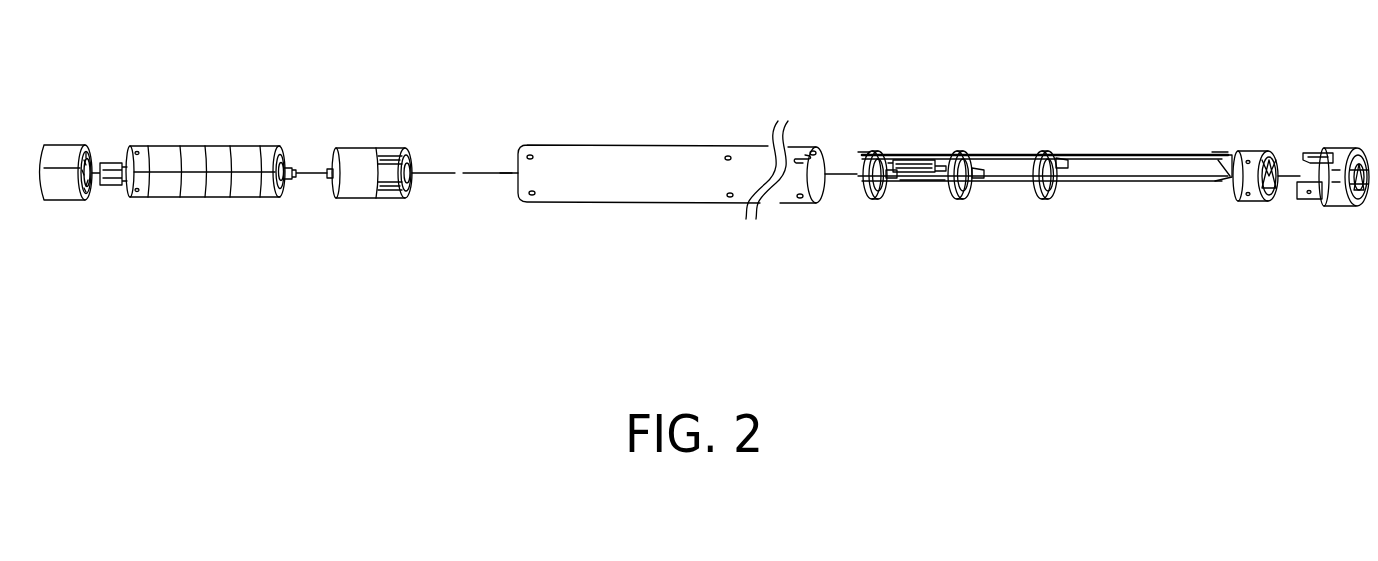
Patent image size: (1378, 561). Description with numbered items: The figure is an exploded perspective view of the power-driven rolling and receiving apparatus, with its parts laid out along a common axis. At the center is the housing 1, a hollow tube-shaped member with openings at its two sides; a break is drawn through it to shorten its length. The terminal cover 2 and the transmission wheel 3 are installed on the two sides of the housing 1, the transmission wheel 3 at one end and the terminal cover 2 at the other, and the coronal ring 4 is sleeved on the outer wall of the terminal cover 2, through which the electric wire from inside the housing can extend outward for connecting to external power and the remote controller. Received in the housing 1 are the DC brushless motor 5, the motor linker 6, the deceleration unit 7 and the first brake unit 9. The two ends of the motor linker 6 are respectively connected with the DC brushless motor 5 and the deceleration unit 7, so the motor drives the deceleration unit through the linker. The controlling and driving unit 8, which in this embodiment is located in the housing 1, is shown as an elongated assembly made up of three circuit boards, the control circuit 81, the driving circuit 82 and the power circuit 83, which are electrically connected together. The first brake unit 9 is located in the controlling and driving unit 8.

The housing 1 is at (589, 190).
The terminal cover 2 is at (1356, 150).
The transmission wheel 3 is at (60, 187).
The coronal ring 4 is at (1330, 198).
The DC brushless motor 5 is at (354, 163).
The motor linker 6 is at (290, 182).
The deceleration unit 7 is at (197, 190).
The controlling and driving unit 8 is at (1045, 198).
The control circuit 81 is at (998, 180).
The driving circuit 82 is at (921, 182).
The power circuit 83 is at (1059, 208).
The first brake unit 9 is at (929, 158).